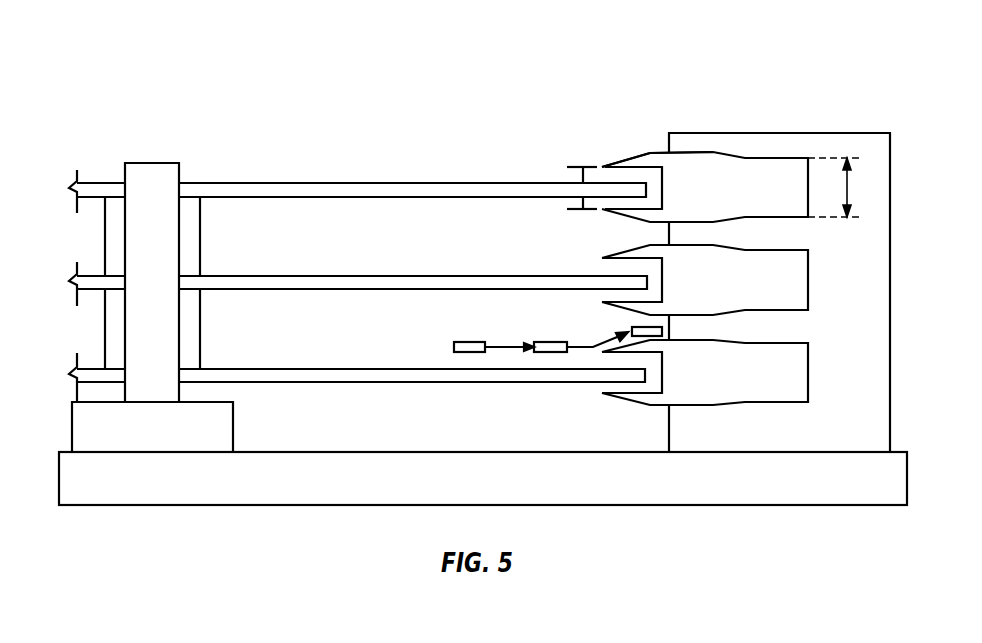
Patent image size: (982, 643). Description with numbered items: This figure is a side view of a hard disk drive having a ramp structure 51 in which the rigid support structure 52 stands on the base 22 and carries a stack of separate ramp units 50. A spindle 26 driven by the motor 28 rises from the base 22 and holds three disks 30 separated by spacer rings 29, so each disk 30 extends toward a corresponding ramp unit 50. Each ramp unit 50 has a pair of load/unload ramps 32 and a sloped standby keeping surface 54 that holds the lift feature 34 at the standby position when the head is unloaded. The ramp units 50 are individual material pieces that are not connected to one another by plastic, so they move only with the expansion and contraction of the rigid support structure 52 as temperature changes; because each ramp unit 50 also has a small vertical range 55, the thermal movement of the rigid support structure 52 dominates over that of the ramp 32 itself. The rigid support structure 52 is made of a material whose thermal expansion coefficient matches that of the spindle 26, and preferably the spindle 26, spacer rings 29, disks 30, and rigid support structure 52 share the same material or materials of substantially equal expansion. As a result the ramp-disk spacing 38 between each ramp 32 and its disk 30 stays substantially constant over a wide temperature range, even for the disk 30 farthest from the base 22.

The base 22 is at (498, 489).
The spindle 26 is at (166, 298).
The motor 28 is at (166, 441).
The spacer ring 29 is at (151, 283).
The disks 30 is at (358, 272).
The load/unload ramp 32 is at (619, 140).
The lift feature 34 is at (533, 328).
The ramp-disk spacing 38 is at (583, 180).
The ramp unit 50 is at (753, 202).
The ramp structure 51 is at (814, 82).
The rigid support structure 52 is at (863, 291).
The standby keeping surface 54 is at (753, 218).
The vertical range 55 is at (851, 186).